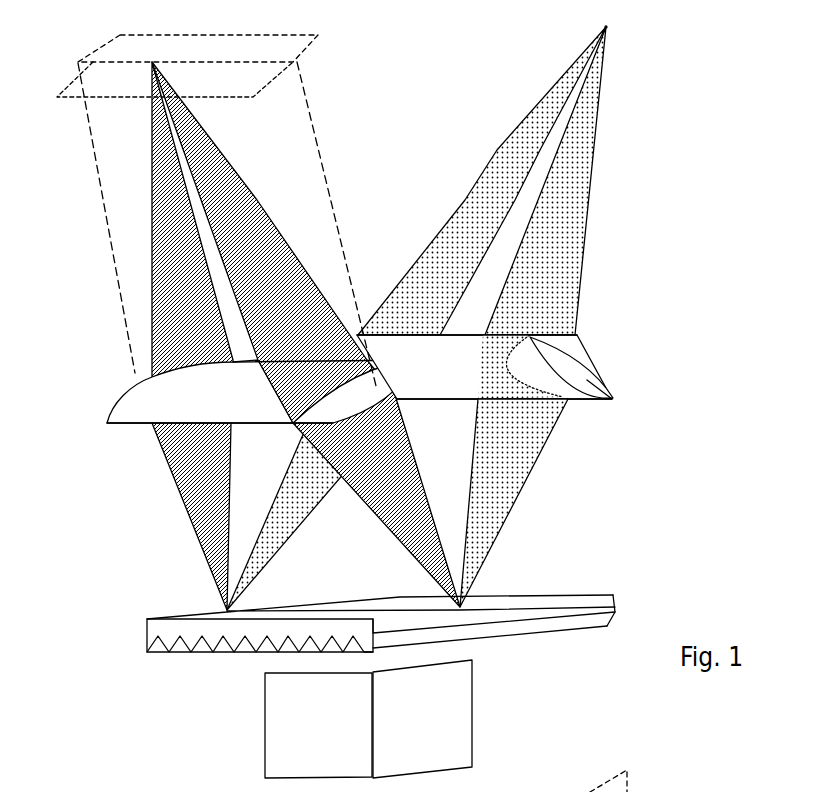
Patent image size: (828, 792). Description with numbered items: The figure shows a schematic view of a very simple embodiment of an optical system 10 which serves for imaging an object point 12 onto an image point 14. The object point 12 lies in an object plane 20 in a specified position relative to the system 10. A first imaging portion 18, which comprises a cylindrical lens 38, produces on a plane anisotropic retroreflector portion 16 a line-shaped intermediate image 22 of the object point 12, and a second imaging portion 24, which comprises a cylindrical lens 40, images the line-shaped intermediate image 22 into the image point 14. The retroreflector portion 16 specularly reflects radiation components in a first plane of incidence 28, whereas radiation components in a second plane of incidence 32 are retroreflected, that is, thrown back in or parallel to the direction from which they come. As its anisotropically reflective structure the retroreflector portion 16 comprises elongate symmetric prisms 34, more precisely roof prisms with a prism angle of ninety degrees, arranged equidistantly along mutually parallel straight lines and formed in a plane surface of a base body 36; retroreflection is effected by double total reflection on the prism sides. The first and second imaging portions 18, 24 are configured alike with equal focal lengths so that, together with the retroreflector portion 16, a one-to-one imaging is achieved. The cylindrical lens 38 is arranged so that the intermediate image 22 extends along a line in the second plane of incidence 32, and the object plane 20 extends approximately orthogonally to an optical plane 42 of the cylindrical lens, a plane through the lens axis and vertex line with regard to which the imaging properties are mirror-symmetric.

The optical system 10 is at (45, 518).
The object point 12 is at (171, 39).
The image point 14 is at (663, 44).
The plane anisotropic retroreflector portion 16 is at (381, 590).
The first imaging portion 18 is at (143, 336).
The object plane 20 is at (153, 108).
The line-shaped intermediate image 22 is at (260, 591).
The second imaging portion 24 is at (460, 318).
The first plane of incidence 28 is at (471, 709).
The second plane of incidence 32 is at (262, 725).
The elongate symmetric prisms 34 is at (225, 670).
The base body 36 is at (647, 613).
The cylindrical lens 38 is at (153, 391).
The cylindrical lens 40 is at (522, 391).
The optical plane 42 is at (235, 226).